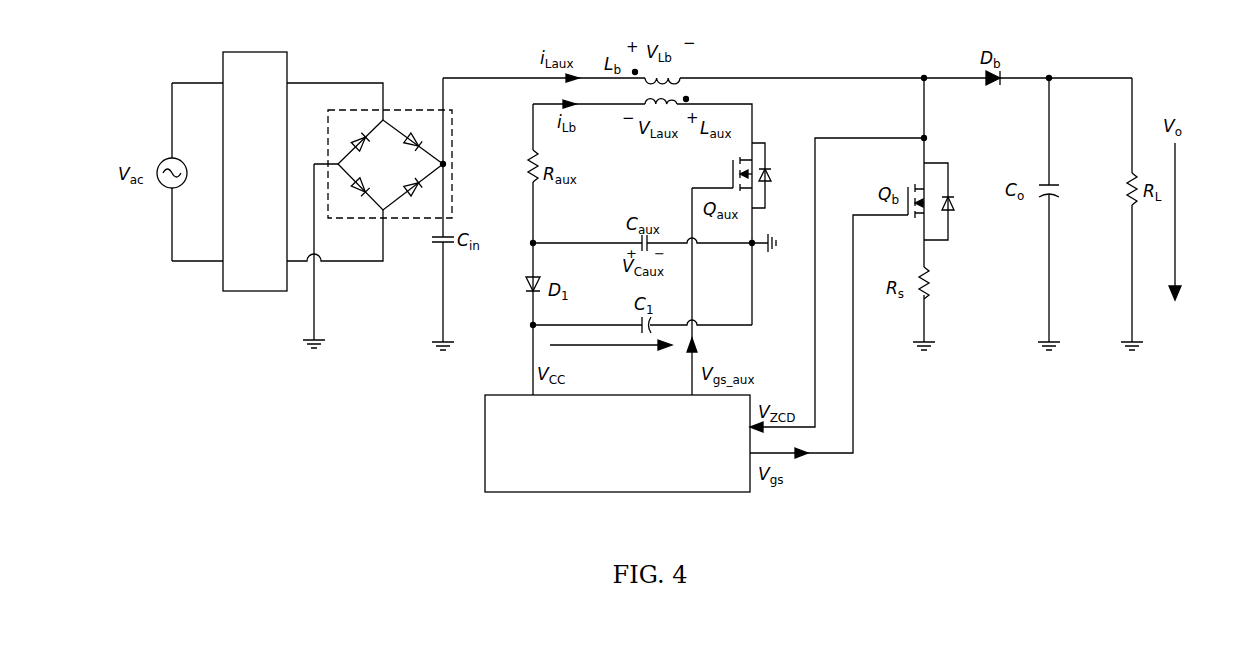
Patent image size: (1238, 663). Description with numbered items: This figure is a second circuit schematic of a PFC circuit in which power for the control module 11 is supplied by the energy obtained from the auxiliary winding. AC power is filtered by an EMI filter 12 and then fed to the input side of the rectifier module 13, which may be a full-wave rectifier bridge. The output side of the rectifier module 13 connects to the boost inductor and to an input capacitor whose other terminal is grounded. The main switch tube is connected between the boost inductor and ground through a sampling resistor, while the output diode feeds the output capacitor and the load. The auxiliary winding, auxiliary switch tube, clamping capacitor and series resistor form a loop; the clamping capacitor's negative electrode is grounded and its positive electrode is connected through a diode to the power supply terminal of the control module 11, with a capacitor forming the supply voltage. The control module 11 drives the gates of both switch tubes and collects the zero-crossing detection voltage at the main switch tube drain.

The control module 11 is at (485, 458).
The EMI filter 12 is at (255, 52).
The rectifier module 13 is at (402, 108).